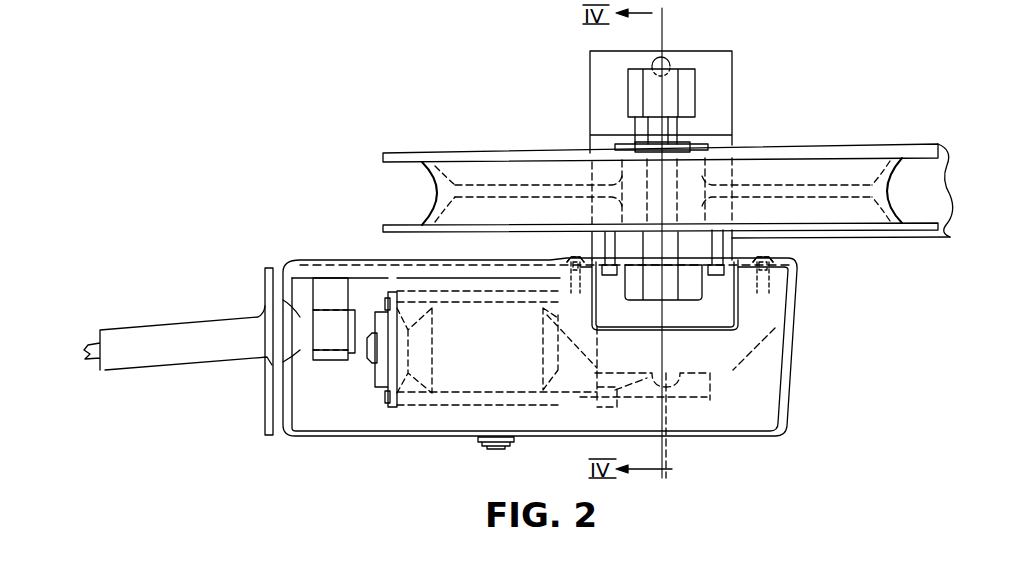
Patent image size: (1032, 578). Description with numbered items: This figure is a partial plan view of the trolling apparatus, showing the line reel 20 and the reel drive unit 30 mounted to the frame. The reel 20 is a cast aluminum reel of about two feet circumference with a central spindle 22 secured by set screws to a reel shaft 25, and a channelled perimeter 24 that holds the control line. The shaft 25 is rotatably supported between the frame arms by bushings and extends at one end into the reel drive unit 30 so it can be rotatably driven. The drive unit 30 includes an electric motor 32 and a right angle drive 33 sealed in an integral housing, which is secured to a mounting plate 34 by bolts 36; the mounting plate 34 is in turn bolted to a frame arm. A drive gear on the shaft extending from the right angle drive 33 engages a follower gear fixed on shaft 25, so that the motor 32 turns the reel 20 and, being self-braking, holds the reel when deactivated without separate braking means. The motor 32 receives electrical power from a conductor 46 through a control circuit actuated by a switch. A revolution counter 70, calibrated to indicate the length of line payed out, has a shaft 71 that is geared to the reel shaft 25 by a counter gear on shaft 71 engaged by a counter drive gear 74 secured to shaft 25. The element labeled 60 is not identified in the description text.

The line reel 20 is at (421, 150).
The central spindle 22 is at (705, 185).
The channelled perimeter 24 is at (392, 187).
The reel shaft 25 is at (670, 207).
The reel drive unit 30 is at (808, 367).
The electric motor 32 is at (458, 384).
The right angle drive 33 is at (717, 365).
The mounting plate 34 is at (331, 259).
The bolts 36 is at (575, 285).
The conductor 46 is at (170, 358).
The mounting bracket 60 is at (929, 246).
The revolution counter 70 is at (706, 85).
The counter shaft 71 is at (668, 128).
The counter drive gear 74 is at (708, 147).